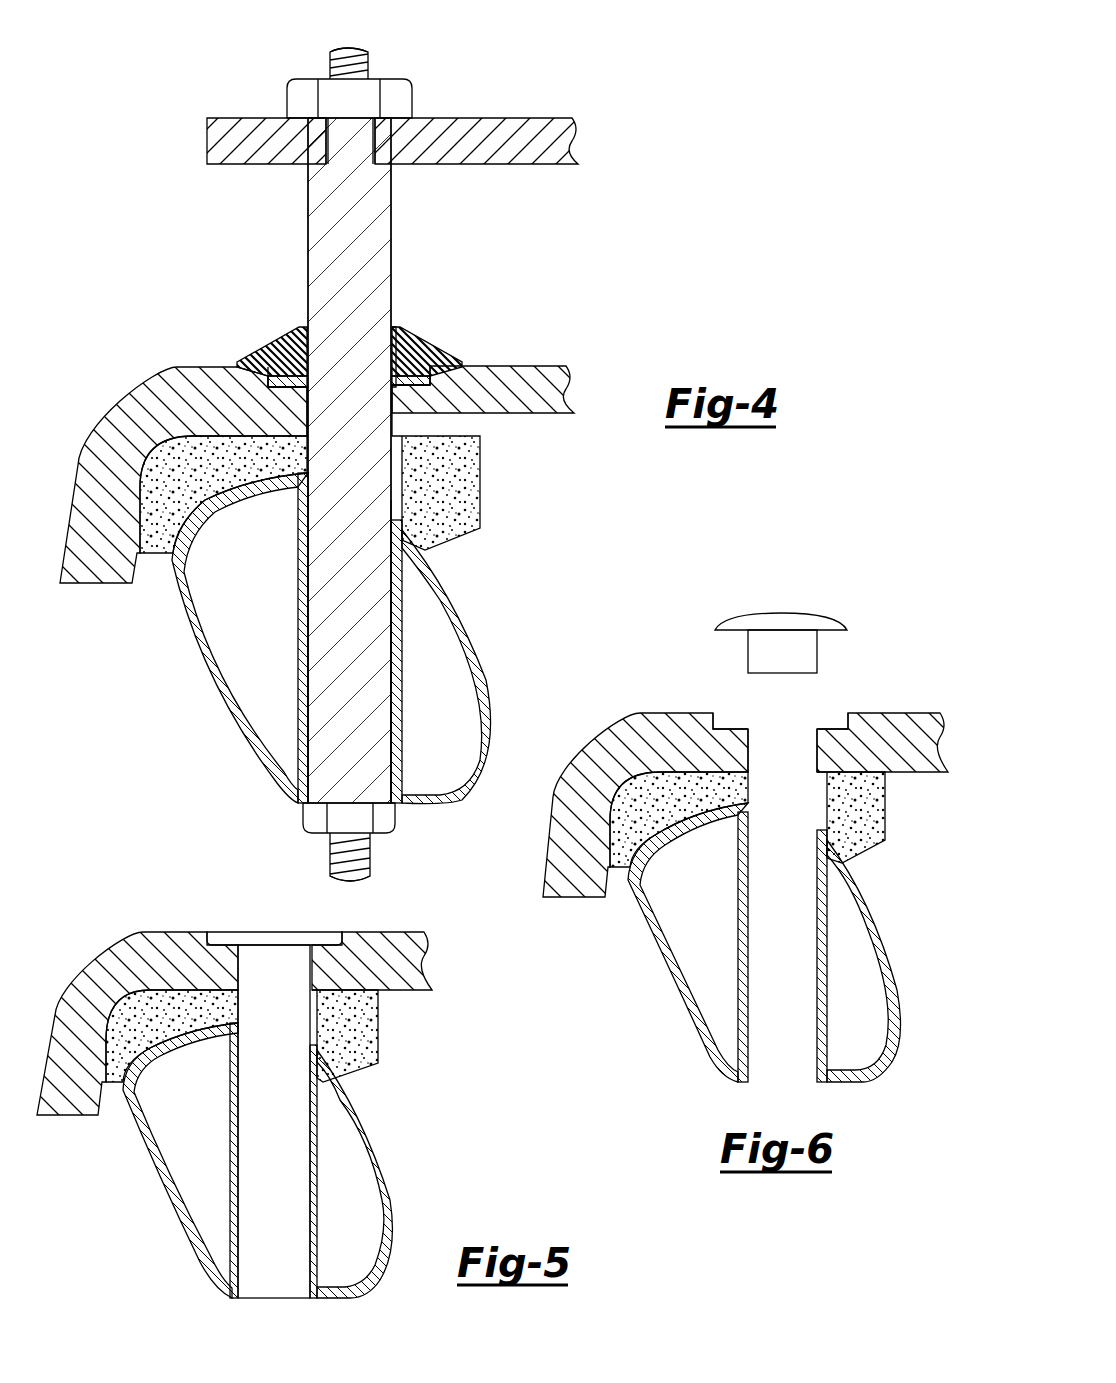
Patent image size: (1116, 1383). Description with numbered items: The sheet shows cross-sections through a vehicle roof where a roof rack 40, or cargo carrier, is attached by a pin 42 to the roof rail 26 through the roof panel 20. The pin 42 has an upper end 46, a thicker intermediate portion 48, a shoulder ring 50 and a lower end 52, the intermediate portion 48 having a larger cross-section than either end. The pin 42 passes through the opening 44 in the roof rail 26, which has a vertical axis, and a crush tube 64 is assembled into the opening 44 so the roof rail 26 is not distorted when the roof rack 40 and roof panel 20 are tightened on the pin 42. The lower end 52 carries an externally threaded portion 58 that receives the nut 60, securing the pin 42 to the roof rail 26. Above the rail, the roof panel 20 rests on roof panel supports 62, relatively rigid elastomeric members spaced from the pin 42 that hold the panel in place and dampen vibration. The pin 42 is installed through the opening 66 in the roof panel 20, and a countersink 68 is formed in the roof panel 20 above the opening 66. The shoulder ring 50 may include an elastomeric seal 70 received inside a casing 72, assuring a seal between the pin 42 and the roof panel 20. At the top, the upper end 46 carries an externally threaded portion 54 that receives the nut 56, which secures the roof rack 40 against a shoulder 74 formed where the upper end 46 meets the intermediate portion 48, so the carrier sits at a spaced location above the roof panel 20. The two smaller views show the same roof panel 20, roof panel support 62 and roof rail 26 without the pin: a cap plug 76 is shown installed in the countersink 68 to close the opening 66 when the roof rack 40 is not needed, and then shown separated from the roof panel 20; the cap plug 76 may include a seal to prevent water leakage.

In FIG. 4, the roof panel 20 is at (555, 428).
In FIG. 5, the roof panel 20 is at (432, 958).
In FIG. 6, the roof panel 20 is at (902, 722).
In FIG. 4, the roof rail 26 is at (356, 638).
In FIG. 5, the roof rail 26 is at (385, 1160).
In FIG. 6, the roof rail 26 is at (892, 940).
In FIG. 4, the roof rack 40 is at (477, 157).
In FIG. 4, the pin 42 is at (393, 255).
In FIG. 4, the opening 44 is at (312, 650).
In FIG. 4, the upper end 46 is at (352, 50).
In FIG. 4, the intermediate portion 48 is at (320, 280).
In FIG. 4, the shoulder ring 50 is at (349, 339).
In FIG. 4, the lower end 52 is at (352, 882).
In FIG. 4, the externally threaded portion 54 is at (328, 60).
In FIG. 4, the nut 56 is at (402, 100).
In FIG. 4, the externally threaded portion 58 is at (330, 870).
In FIG. 4, the nut 60 is at (397, 820).
In FIG. 4, the roof panel support 62 is at (165, 555).
In FIG. 5, the roof panel support 62 is at (372, 1032).
In FIG. 6, the roof panel support 62 is at (872, 817).
In FIG. 4, the crush tube 64 is at (404, 716).
In FIG. 4, the opening 66 is at (312, 440).
In FIG. 6, the opening 66 is at (752, 748).
In FIG. 4, the countersink 68 is at (432, 380).
In FIG. 6, the countersink 68 is at (730, 727).
In FIG. 4, the seal 70 is at (270, 352).
In FIG. 4, the casing 72 is at (297, 338).
In FIG. 4, the shoulder 74 is at (315, 158).
In FIG. 5, the cap plug 76 is at (282, 955).
In FIG. 6, the cap plug 76 is at (758, 660).